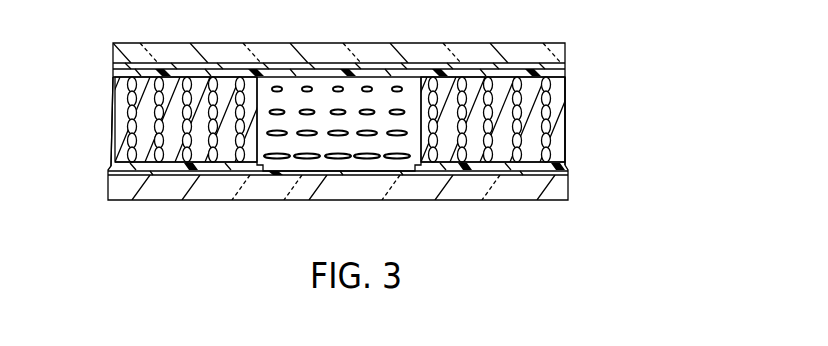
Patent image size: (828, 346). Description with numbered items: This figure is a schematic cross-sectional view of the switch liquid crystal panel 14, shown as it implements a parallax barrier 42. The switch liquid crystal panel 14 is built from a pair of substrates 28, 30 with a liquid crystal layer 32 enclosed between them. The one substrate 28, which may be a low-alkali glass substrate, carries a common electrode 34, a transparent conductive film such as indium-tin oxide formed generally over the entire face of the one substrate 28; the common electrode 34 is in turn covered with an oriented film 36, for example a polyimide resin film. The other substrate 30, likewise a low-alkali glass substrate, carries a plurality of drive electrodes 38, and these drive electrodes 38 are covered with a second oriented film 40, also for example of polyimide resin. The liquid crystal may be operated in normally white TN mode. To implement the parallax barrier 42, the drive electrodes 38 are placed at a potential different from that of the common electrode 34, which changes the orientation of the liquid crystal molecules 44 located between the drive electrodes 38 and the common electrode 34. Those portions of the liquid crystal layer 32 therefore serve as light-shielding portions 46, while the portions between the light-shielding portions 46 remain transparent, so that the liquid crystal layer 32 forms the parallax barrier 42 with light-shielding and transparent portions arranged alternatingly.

The switch liquid crystal panel 14 is at (566, 52).
The substrate 28 is at (522, 55).
The substrate 30 is at (468, 185).
The liquid crystal layer 32 is at (319, 88).
The common electrode 34 is at (208, 63).
The oriented film 36 is at (158, 70).
The drive electrodes 38 is at (203, 172).
The oriented film 40 is at (565, 164).
The parallax barrier 42 is at (566, 128).
The liquid crystal molecules 44 is at (388, 92).
The light-shielding portions 46 is at (128, 100).